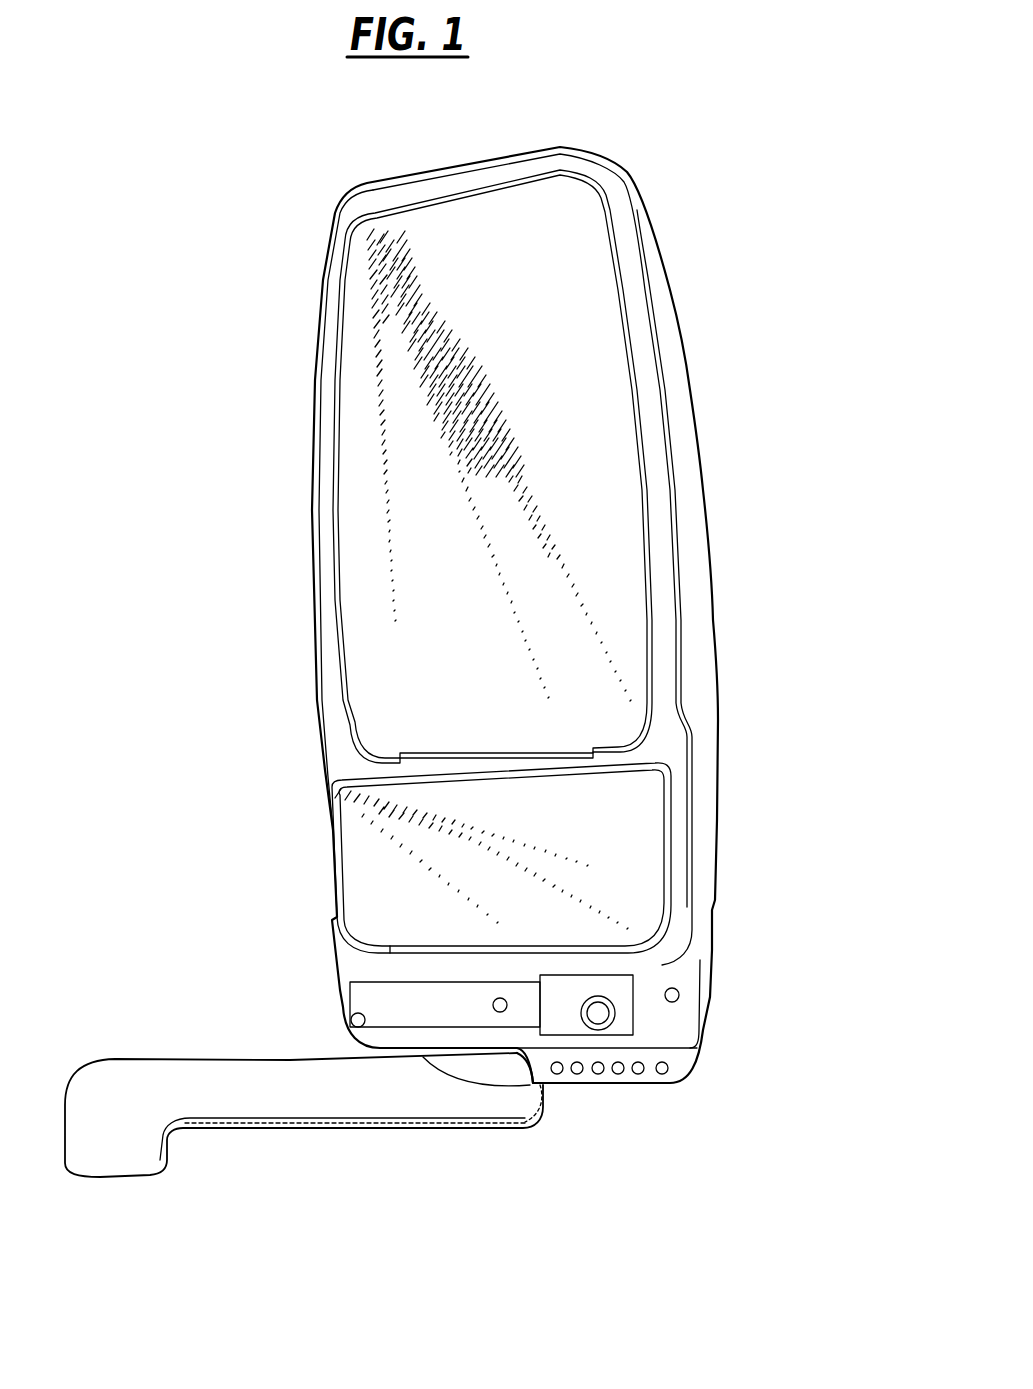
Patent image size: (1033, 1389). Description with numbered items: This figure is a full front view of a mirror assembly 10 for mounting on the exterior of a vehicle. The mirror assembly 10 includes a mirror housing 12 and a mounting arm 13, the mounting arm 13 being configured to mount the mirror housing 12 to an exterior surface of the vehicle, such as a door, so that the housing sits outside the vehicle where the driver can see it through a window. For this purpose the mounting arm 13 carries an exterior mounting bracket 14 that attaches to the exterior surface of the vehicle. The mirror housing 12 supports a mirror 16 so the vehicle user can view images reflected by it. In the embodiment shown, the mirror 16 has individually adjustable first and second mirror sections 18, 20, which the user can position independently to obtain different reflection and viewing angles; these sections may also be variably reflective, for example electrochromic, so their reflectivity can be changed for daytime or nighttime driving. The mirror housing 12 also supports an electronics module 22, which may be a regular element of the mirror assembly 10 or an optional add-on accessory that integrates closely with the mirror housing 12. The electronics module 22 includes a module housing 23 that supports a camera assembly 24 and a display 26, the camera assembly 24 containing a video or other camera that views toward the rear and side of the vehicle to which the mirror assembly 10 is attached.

The mirror assembly 10 is at (709, 164).
The mirror housing 12 is at (660, 329).
The mounting arm 13 is at (335, 1088).
The exterior mounting bracket 14 is at (125, 1153).
The mirror 16 is at (358, 450).
The first mirror section 18 is at (467, 573).
The second mirror section 20 is at (368, 838).
The electronics module 22 is at (738, 958).
The module housing 23 is at (347, 962).
The camera assembly 24 is at (563, 1013).
The display 26 is at (660, 1067).